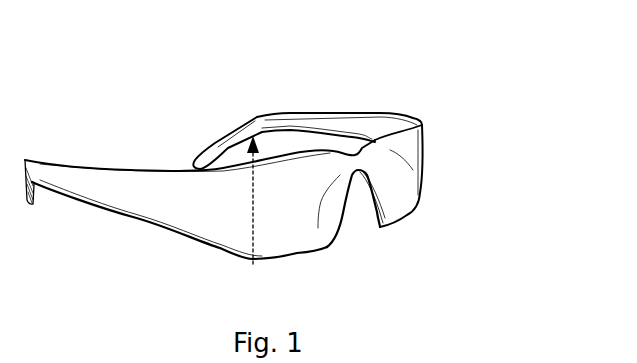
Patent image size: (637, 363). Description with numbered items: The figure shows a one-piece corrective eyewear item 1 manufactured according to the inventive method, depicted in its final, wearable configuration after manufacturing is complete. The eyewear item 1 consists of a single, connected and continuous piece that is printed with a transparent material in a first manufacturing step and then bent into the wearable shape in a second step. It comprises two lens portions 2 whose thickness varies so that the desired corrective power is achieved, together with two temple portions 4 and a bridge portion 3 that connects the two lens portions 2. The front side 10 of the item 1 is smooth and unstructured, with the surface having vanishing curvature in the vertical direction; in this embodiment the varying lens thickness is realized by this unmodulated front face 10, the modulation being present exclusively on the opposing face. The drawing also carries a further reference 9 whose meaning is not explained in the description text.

The eyewear 1 is at (281, 172).
The lens 2 is at (408, 190).
The frame 3 is at (360, 162).
The temple 4 is at (297, 125).
The lower edge 9 is at (253, 265).
The side portion of frame 10 is at (427, 168).